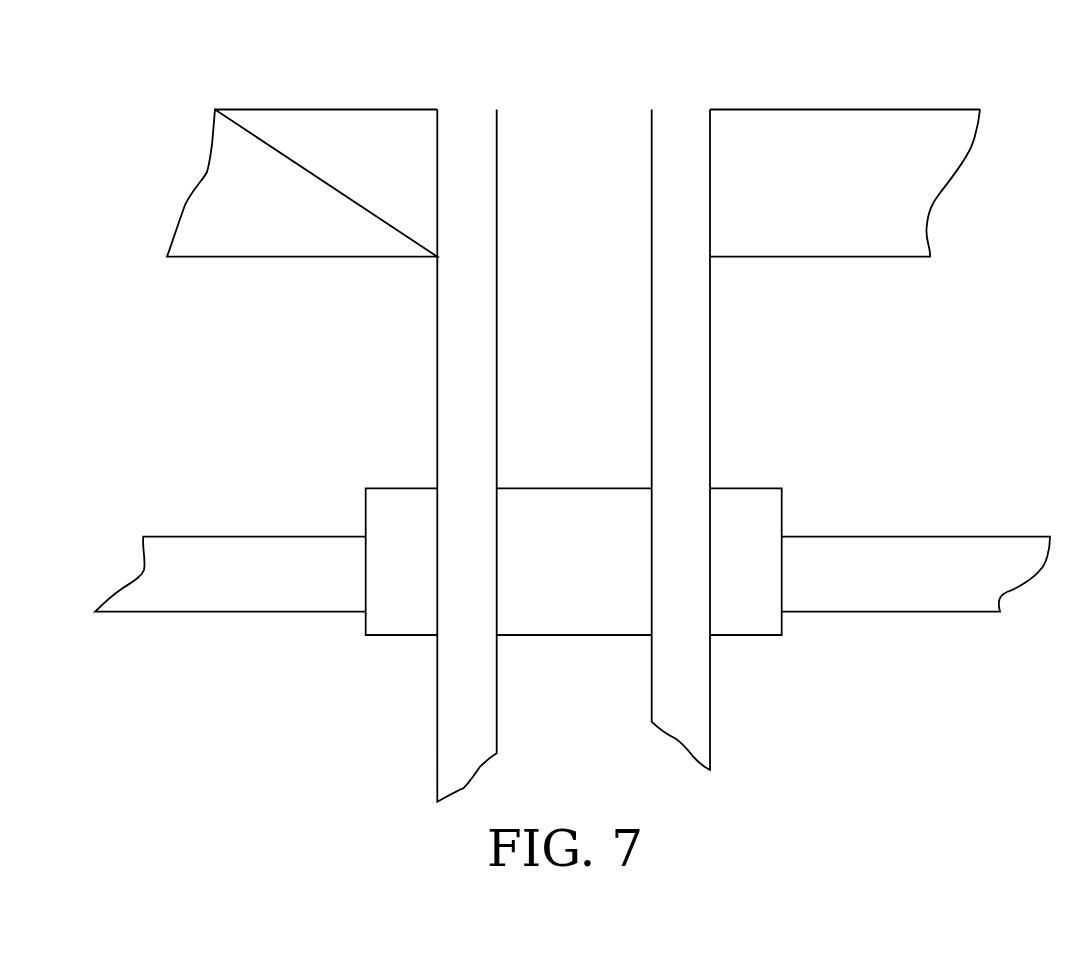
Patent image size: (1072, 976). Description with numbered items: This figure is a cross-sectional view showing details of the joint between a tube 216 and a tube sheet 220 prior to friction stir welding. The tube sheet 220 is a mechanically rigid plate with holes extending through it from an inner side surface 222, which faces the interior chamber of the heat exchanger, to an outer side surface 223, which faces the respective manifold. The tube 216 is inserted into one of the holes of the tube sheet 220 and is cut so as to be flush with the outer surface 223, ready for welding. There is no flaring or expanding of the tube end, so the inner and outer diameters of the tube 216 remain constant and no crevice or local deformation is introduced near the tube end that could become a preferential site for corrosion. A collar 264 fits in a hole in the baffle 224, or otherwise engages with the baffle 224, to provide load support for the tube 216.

The tube sheet 220 is at (795, 96).
The outer side surface 223 is at (921, 108).
The inner side surface 222 is at (880, 258).
The collar 264 is at (380, 636).
The tube 216 is at (710, 702).
The baffle 224 is at (953, 613).